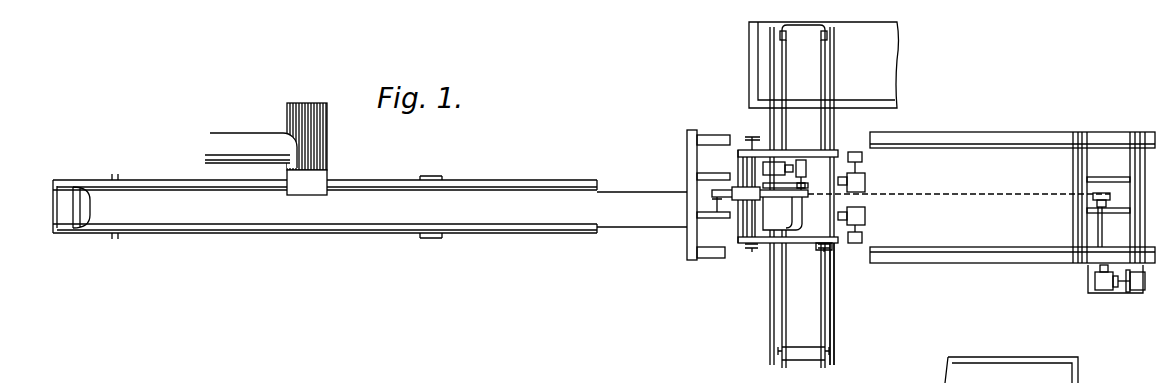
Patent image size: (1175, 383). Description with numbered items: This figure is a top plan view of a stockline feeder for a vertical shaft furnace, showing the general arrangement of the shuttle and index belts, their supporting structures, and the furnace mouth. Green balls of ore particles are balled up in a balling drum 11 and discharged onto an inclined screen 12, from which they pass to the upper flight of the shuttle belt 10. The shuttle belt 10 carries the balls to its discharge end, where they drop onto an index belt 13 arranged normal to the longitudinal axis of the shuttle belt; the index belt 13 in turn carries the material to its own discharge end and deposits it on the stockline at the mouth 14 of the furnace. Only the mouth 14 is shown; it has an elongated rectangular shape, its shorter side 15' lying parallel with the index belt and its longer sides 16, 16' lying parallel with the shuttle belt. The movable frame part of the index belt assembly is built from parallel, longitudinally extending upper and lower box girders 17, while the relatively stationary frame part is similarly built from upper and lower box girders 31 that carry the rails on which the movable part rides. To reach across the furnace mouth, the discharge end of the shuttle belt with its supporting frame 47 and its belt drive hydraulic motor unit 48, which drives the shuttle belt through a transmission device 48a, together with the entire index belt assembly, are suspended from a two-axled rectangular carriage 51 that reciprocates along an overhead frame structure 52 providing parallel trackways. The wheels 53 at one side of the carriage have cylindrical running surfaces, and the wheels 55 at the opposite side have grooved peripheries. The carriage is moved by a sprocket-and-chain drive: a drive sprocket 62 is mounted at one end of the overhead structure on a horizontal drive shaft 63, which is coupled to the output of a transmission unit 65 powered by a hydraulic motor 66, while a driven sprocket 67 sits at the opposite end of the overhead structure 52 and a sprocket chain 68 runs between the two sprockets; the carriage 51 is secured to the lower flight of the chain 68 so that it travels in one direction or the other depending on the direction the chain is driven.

The shuttle belt 10 is at (508, 198).
The balling drum 11 is at (232, 143).
The inclined screen 12 is at (327, 133).
The index belt 13 is at (810, 309).
The mouth of the furnace 14 is at (885, 69).
The shorter side of the furnace mouth 15' is at (758, 87).
The longer side of the furnace mouth 16 is at (997, 343).
The longer side of the furnace mouth 16' is at (911, 99).
The upper and lower box girders 17 is at (775, 73).
The upper and lower box girders 31 is at (835, 343).
The supporting frame 47 is at (475, 233).
The belt drive hydraulic motor unit 48 is at (768, 160).
The transmission device 48a is at (805, 160).
The carriage 51 is at (797, 243).
The overhead frame structure 52 is at (965, 122).
The wheels 53 is at (752, 136).
The wheels 55 is at (825, 250).
The drive sprocket 62 is at (1105, 194).
The drive shaft 63 is at (1098, 233).
The transmission unit 65 is at (1100, 282).
The hydraulic motor 66 is at (1135, 285).
The driven sprocket 67 is at (712, 198).
The sprocket chain 68 is at (965, 185).